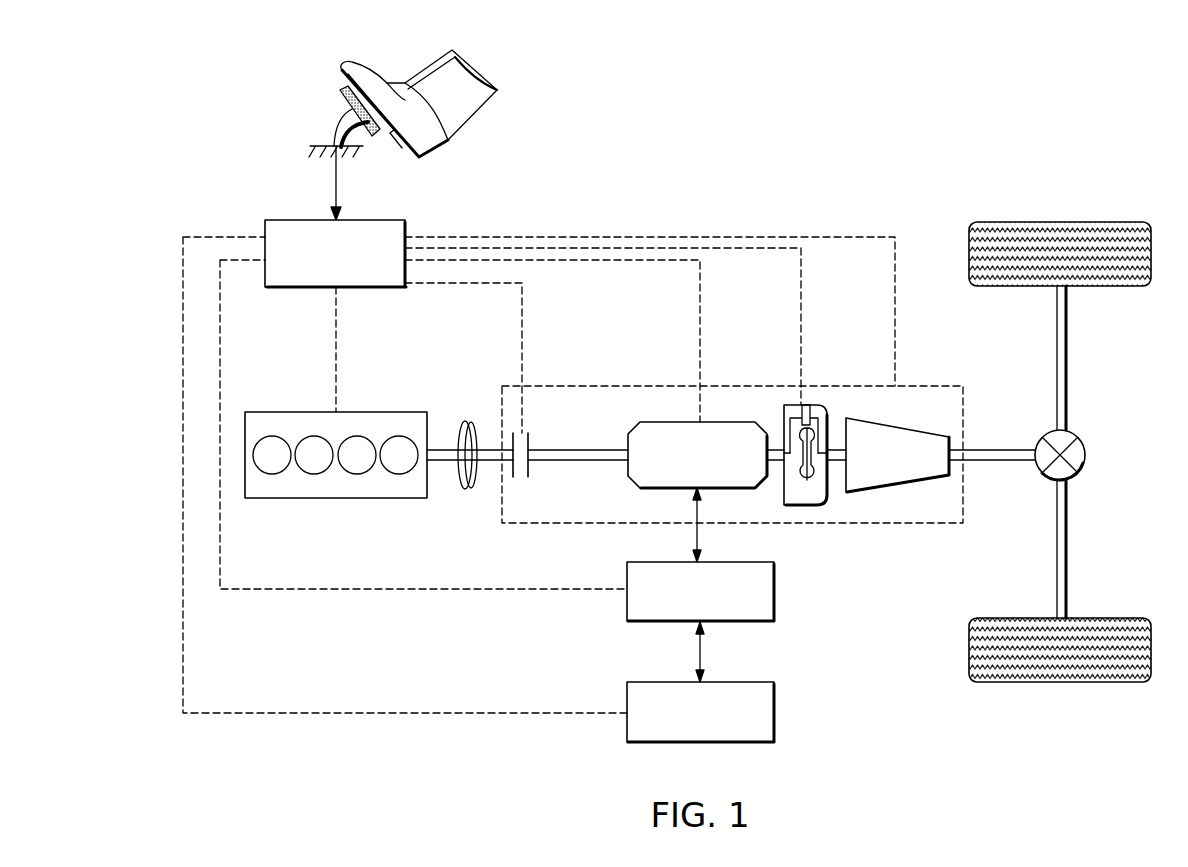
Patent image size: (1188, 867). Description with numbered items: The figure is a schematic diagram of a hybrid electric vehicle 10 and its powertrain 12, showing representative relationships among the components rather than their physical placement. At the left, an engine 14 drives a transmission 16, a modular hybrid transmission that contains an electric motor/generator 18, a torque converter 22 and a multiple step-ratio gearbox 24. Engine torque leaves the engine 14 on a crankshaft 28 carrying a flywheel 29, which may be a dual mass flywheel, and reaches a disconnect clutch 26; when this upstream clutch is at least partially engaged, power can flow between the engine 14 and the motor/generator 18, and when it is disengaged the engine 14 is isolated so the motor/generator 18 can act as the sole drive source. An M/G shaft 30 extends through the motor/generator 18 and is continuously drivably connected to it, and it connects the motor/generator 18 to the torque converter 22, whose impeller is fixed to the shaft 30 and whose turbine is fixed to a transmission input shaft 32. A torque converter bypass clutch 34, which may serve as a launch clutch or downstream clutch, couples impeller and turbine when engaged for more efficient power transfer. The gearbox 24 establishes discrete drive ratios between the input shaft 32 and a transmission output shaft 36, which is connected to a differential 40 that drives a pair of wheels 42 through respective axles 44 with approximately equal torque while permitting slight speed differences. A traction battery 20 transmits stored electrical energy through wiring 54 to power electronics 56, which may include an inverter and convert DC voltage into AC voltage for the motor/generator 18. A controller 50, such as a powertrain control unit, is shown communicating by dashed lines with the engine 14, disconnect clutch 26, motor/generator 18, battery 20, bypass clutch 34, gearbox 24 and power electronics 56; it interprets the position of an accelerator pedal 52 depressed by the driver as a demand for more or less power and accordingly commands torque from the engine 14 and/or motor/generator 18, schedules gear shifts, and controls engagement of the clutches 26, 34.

The hybrid electric vehicle 10 is at (804, 142).
The powertrain 12 is at (388, 632).
The engine 14 is at (300, 412).
The transmission 16 is at (762, 385).
The electric motor/generator 18 is at (672, 420).
The traction battery 20 is at (774, 712).
The torque converter 22 is at (800, 506).
The gearbox 24 is at (897, 490).
The disconnect clutch 26 is at (529, 446).
The crankshaft 28 is at (457, 440).
The flywheel 29 is at (457, 478).
The M/G shaft 30 is at (590, 448).
The transmission input shaft 32 is at (836, 447).
The torque converter bypass clutch 34 is at (807, 408).
The transmission output shaft 36 is at (983, 448).
The differential 40 is at (1087, 458).
The wheels 42 is at (1062, 222).
The axles 44 is at (1067, 360).
The controller 50 is at (300, 220).
The accelerator pedal 52 is at (340, 103).
The wiring 54 is at (700, 657).
The power electronics 56 is at (774, 592).